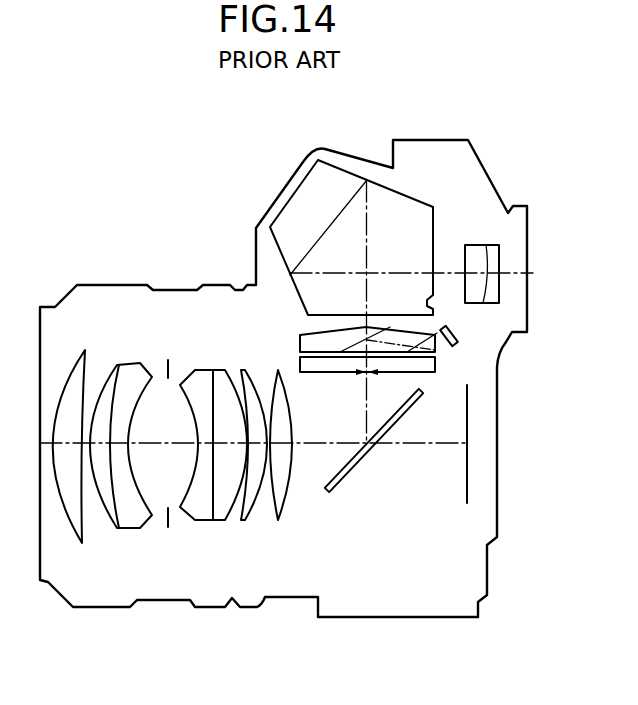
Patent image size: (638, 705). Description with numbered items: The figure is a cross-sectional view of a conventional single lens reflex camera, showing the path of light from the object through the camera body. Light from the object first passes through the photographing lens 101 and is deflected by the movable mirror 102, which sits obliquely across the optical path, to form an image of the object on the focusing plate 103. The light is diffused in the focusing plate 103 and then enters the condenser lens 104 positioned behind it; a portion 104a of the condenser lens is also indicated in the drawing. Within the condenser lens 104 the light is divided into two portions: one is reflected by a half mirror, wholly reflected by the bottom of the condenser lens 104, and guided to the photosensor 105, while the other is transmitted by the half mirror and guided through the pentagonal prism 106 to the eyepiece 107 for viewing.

The photographing lens 101 is at (128, 362).
The movable mirror 102 is at (351, 465).
The focusing plate 103 is at (435, 362).
The condenser lens 104 is at (300, 347).
The light-splitting portion of condenser lens 104a is at (347, 345).
The photosensor 105 is at (457, 333).
The pentagonal prism 106 is at (327, 172).
The eyepiece 107 is at (500, 258).